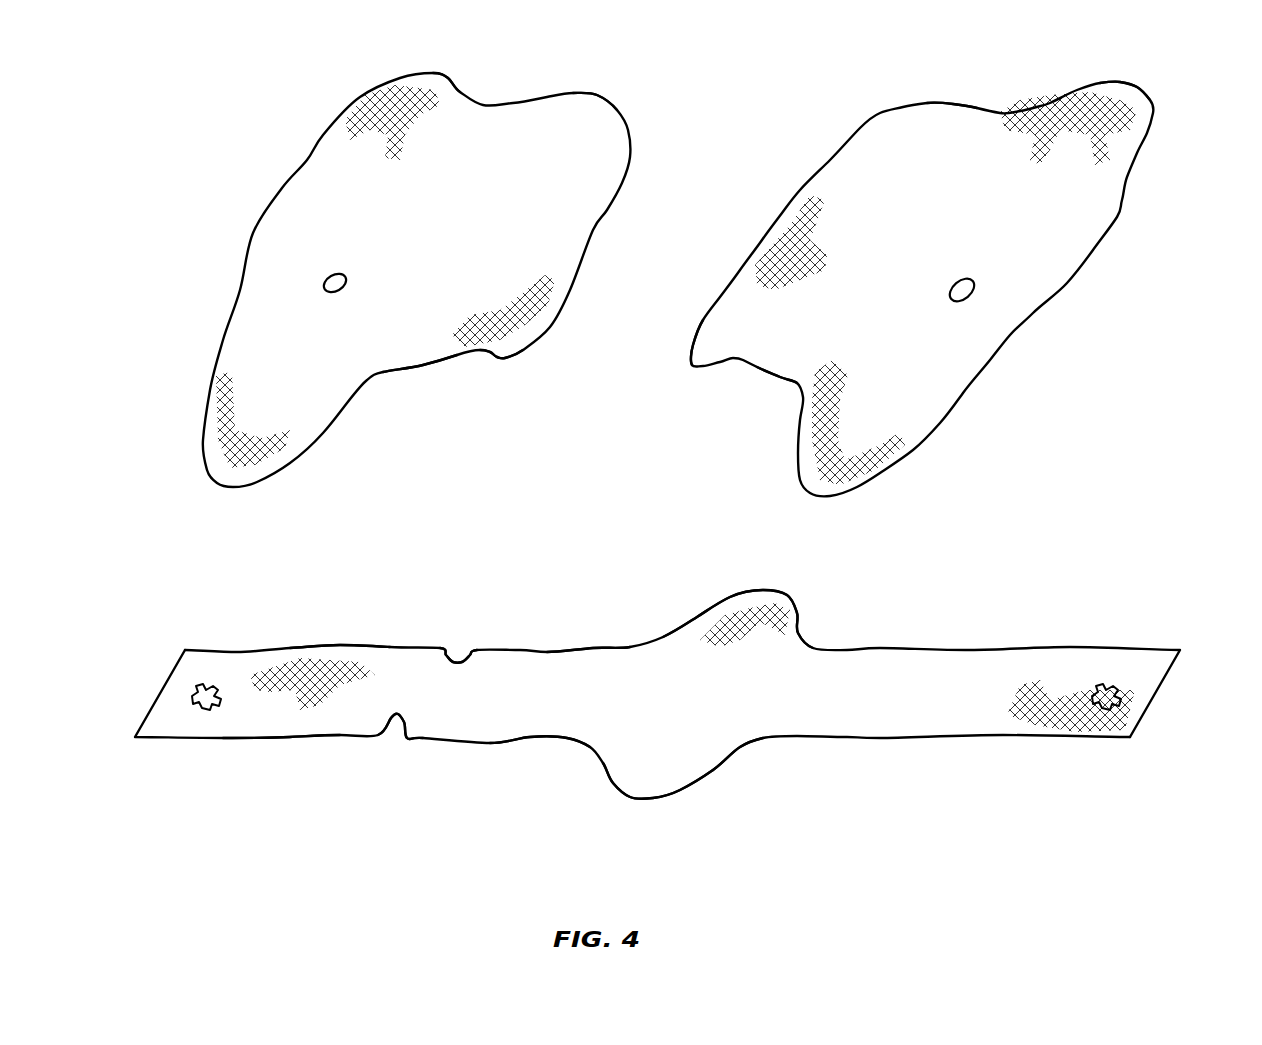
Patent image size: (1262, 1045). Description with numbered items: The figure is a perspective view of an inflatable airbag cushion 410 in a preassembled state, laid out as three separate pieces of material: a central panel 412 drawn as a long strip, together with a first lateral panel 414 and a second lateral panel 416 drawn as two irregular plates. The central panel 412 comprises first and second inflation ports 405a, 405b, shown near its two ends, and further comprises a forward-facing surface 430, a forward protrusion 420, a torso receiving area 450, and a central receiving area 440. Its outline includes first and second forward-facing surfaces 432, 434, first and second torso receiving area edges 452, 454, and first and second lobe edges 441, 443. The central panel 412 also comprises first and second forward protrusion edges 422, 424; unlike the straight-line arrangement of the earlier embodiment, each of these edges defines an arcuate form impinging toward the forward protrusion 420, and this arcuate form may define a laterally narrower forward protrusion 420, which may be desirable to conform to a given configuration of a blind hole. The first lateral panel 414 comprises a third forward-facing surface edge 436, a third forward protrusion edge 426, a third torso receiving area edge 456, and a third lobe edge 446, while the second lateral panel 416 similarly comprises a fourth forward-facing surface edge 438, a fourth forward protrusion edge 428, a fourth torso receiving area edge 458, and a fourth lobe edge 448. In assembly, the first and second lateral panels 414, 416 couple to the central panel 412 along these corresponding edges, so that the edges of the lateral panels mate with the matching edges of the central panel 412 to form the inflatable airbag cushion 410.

The inflatable airbag cushion 410 is at (176, 104).
The central panel 412 is at (891, 707).
The first lateral panel 414 is at (451, 236).
The second lateral panel 416 is at (948, 221).
The forward protrusion 420 is at (430, 697).
The first forward protrusion edge 422 is at (457, 660).
The second forward protrusion edge 424 is at (402, 720).
The third forward protrusion edge 426 is at (505, 358).
The fourth forward protrusion edge 428 is at (693, 364).
The forward-facing surface 430 is at (303, 698).
The first forward-facing surface 432 is at (340, 645).
The second forward-facing surface 434 is at (295, 740).
The third forward-facing surface edge 436 is at (425, 367).
The fourth forward-facing surface edge 438 is at (773, 375).
The central receiving area 440 is at (692, 705).
The first lobe edge 441 is at (767, 589).
The second lobe edge 443 is at (630, 798).
The third lobe edge 446 is at (447, 78).
The fourth lobe edge 448 is at (1127, 83).
The torso receiving area 450 is at (608, 705).
The first torso receiving area edge 452 is at (593, 648).
The second torso receiving area edge 454 is at (553, 740).
The third torso receiving area edge 456 is at (598, 95).
The fourth torso receiving area edge 458 is at (955, 104).
The first inflation port 405a is at (197, 693).
The second inflation port 405b is at (1117, 690).